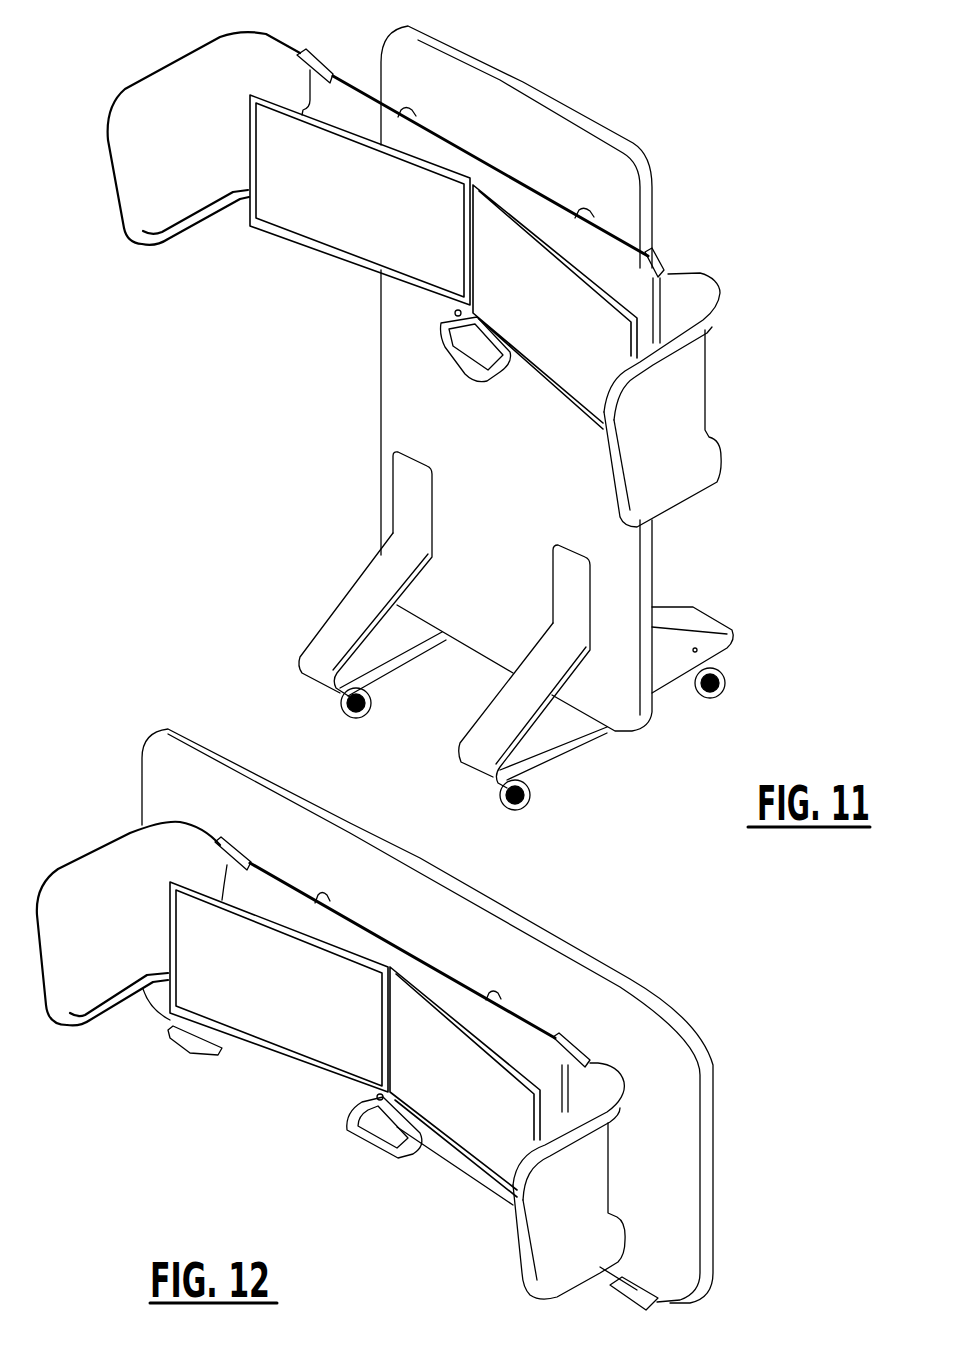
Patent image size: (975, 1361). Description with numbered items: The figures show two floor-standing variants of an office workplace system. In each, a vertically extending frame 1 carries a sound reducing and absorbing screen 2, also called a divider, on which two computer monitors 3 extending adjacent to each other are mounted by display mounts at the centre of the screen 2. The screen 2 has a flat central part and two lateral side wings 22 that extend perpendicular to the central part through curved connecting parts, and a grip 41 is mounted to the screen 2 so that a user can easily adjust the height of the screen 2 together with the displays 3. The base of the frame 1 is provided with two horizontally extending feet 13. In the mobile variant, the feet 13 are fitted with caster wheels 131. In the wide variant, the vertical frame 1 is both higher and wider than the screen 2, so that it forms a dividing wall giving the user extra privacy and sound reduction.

In FIG. 11, the frame 1 is at (520, 110).
In FIG. 12, the frame 1 is at (482, 940).
In FIG. 11, the screen 2 is at (667, 292).
In FIG. 12, the screen 2 is at (520, 1043).
In FIG. 11, the computer monitors 3 is at (340, 227).
In FIG. 12, the computer monitors 3 is at (263, 1027).
In FIG. 11, the feet 13 is at (365, 590).
In FIG. 12, the feet 13 is at (180, 1035).
In FIG. 11, the caster wheels 131 is at (350, 687).
In FIG. 12, the side wings 22 is at (107, 867).
In FIG. 11, the grip 41 is at (476, 349).
In FIG. 12, the grip 41 is at (373, 1140).